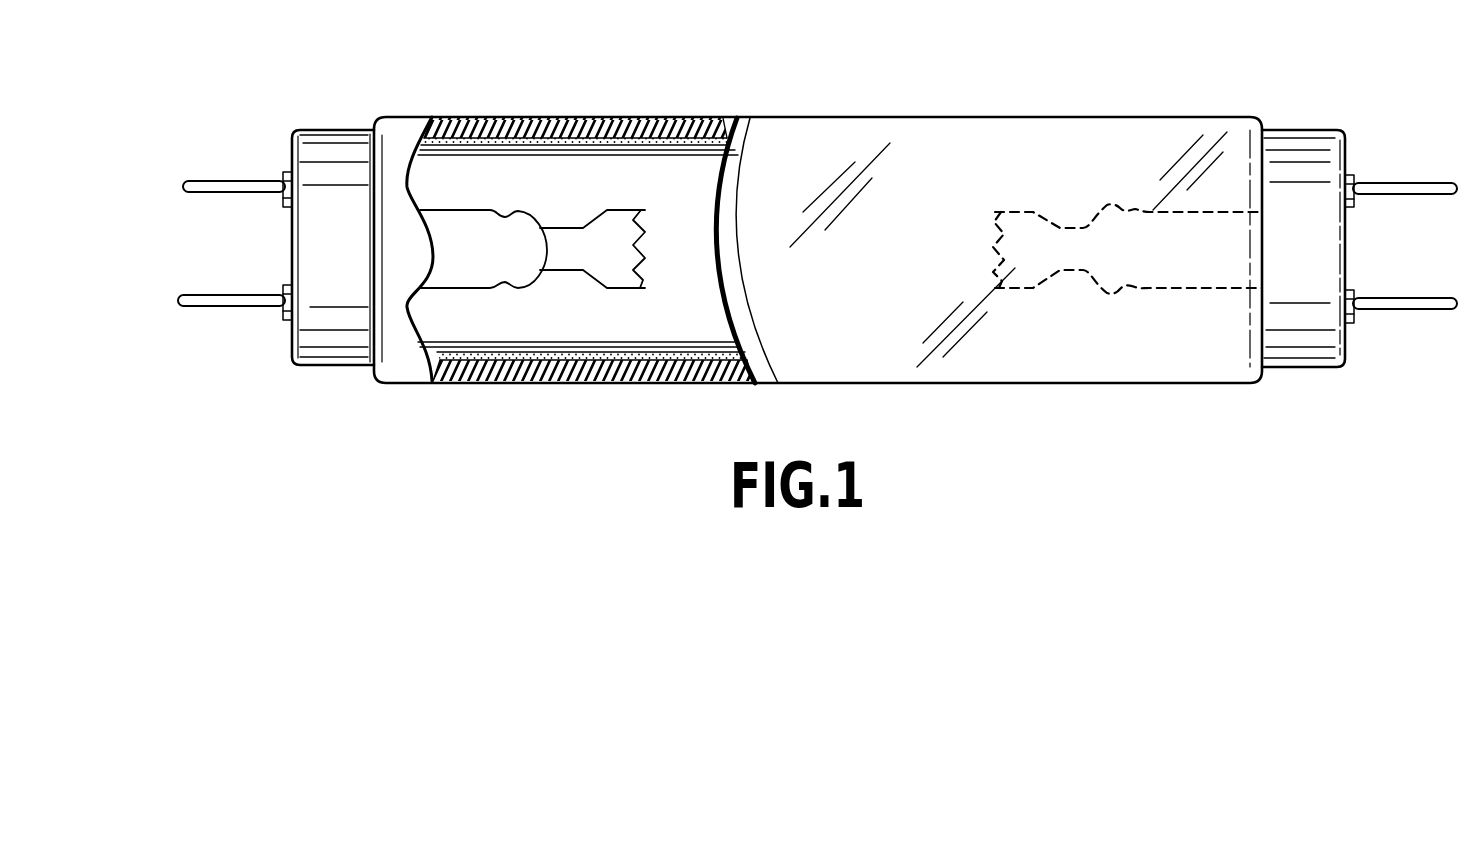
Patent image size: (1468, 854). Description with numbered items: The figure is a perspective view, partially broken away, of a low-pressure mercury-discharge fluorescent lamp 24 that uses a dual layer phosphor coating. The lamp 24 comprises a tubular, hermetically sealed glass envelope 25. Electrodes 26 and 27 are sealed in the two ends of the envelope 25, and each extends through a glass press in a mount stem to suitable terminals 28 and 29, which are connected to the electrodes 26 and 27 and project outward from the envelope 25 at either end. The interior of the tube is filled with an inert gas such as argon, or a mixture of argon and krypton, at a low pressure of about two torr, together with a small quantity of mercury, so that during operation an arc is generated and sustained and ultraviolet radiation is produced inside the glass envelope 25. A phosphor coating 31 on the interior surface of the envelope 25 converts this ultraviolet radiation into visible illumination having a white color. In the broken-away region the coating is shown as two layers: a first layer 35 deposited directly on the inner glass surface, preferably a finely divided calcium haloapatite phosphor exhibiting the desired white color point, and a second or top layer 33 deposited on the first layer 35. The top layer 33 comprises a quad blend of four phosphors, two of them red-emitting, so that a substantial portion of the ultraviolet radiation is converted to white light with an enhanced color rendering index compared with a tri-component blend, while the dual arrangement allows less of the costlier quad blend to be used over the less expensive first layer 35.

The fluorescent lamp 24 is at (1105, 81).
The glass envelope 25 is at (897, 118).
The electrode 26 is at (640, 245).
The electrode 27 is at (992, 228).
The terminals 28 is at (202, 181).
The terminals 29 is at (1413, 183).
The phosphor coating 31 is at (598, 137).
The second phosphor layer 33 is at (503, 343).
The first layer 35 is at (566, 383).